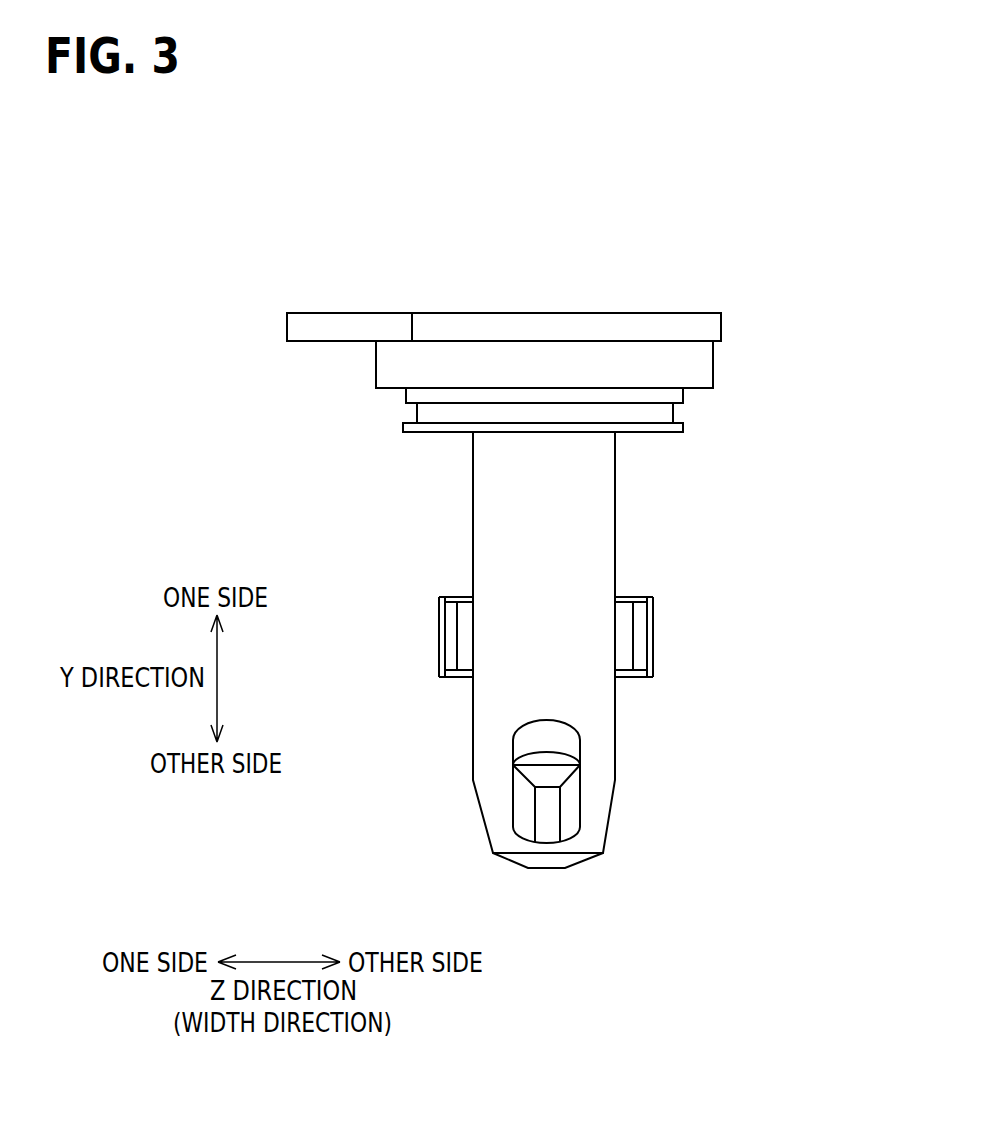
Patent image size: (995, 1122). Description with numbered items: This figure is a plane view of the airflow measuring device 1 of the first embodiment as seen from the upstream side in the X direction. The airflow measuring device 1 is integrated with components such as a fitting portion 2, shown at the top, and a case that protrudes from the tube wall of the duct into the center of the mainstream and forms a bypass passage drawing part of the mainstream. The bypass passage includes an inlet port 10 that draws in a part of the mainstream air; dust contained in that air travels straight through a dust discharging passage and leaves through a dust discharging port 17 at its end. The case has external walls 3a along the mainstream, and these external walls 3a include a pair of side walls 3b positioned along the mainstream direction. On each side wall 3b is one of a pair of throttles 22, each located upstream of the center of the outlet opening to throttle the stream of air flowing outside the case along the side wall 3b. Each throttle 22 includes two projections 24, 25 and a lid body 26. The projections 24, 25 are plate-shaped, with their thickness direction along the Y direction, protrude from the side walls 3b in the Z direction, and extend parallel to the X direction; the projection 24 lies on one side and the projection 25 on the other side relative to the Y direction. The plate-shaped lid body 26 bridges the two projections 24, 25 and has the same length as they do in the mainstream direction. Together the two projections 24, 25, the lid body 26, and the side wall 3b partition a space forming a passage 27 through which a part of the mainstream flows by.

The airflow measuring device 1 is at (800, 306).
The fitting portion 2 is at (683, 426).
The external walls 3a is at (557, 679).
The side walls 3b is at (473, 525).
The inlet port 10 is at (573, 810).
The dust discharging port 17 is at (545, 823).
The throttle 22 is at (560, 635).
The projection 24 is at (457, 597).
The projection 25 is at (453, 675).
The lid body 26 is at (441, 636).
The passage 27 is at (464, 626).